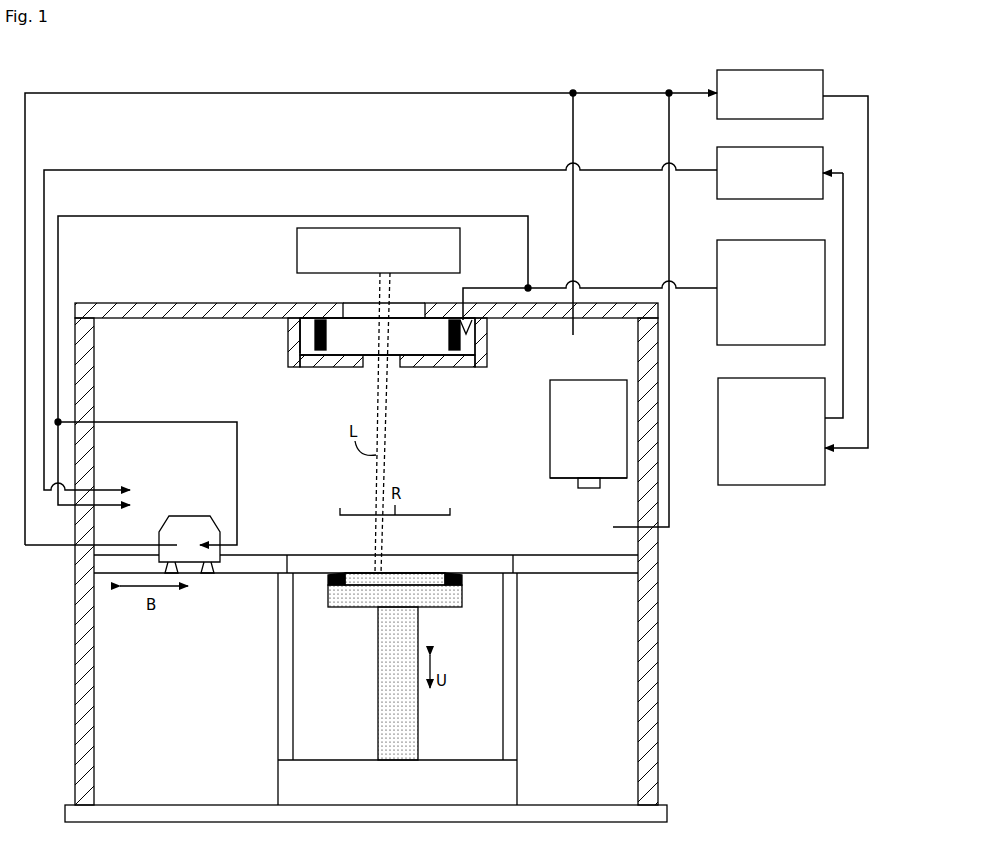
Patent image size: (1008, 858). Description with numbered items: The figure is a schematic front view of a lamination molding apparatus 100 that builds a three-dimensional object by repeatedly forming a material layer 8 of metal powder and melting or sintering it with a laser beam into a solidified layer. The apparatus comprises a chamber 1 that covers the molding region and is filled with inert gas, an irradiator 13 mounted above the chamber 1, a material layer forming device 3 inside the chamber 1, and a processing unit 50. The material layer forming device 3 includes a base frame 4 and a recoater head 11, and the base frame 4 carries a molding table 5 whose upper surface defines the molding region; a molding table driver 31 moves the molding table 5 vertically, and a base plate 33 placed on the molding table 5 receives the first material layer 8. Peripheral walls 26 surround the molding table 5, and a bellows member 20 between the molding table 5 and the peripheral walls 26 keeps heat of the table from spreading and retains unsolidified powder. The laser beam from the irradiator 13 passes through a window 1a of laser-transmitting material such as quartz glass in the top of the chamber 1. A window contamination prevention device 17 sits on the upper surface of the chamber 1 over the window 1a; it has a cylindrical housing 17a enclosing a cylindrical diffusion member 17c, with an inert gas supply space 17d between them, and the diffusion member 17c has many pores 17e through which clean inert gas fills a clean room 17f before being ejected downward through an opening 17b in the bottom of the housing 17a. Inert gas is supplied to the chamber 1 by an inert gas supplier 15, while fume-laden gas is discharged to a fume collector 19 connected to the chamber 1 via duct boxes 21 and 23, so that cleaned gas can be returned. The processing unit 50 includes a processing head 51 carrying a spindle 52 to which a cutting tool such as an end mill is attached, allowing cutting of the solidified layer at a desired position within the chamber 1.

The lamination molding apparatus 100 is at (925, 47).
The chamber 1 is at (200, 303).
The window 1a is at (360, 303).
The irradiator 13 is at (460, 258).
The window contamination prevention device 17 is at (493, 343).
The cylindrical housing 17a is at (300, 340).
The opening 17b is at (368, 358).
The cylindrical diffusion member 17c is at (450, 342).
The inert gas supply space 17d is at (462, 338).
The pores 17e is at (315, 340).
The clean room 17f is at (426, 342).
The duct box 21 is at (783, 70).
The duct box 23 is at (792, 147).
The inert gas supplier 15 is at (755, 240).
The fume collector 19 is at (758, 378).
The processing unit 50 is at (525, 473).
The processing head 51 is at (550, 396).
The spindle 52 is at (580, 490).
The recoater head 11 is at (218, 580).
The base frame 4 is at (258, 574).
The material layer forming device 3 is at (205, 611).
The peripheral walls 26 is at (282, 645).
The material layer 8 is at (432, 573).
The molding table 5 is at (455, 606).
The bellows member 20 is at (464, 580).
The base plate 33 is at (365, 600).
The molding table driver 31 is at (378, 680).